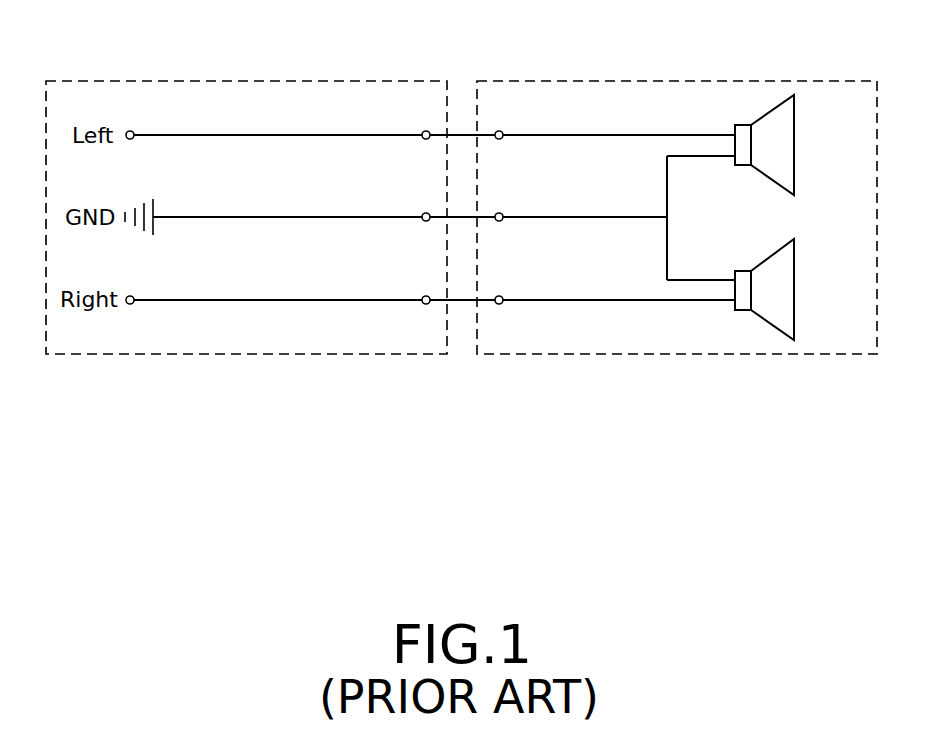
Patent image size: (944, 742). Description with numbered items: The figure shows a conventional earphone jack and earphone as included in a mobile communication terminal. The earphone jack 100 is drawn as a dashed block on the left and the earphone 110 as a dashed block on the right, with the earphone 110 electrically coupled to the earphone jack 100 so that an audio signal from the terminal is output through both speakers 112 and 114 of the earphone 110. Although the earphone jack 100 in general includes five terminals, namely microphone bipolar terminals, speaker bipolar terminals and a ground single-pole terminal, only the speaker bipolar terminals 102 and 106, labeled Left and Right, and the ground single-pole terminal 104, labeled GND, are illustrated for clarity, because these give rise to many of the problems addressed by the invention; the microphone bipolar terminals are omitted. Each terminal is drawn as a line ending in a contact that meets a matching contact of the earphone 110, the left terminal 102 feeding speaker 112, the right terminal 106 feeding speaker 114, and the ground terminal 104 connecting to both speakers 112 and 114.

The earphone jack 100 is at (248, 81).
The speaker bipolar terminal 102 is at (426, 131).
The ground single-pole terminal 104 is at (422, 221).
The speaker bipolar terminal 106 is at (426, 304).
The earphone 110 is at (688, 81).
The speaker 112 is at (795, 143).
The speaker 114 is at (795, 288).